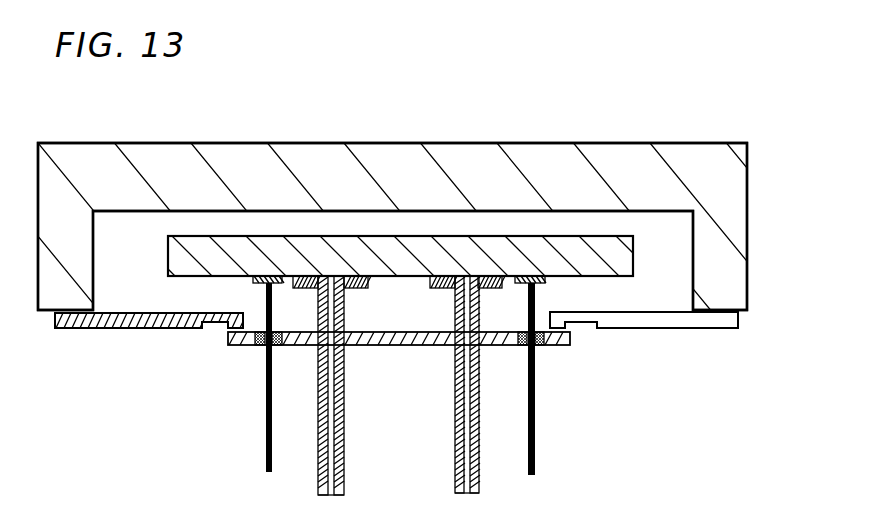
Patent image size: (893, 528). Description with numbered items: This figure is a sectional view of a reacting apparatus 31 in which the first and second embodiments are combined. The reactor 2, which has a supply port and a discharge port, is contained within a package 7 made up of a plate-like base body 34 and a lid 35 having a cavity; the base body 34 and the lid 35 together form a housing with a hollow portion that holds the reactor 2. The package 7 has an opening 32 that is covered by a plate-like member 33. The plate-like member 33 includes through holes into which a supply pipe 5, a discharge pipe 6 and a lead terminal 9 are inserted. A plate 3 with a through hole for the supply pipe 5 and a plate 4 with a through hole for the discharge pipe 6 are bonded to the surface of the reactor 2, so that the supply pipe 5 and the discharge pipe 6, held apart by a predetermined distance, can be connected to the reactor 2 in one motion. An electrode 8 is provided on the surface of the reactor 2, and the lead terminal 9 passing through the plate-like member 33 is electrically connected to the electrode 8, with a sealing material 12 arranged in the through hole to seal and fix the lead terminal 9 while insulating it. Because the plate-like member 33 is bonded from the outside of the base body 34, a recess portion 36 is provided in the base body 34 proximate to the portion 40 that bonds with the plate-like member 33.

The reacting apparatus 31 is at (797, 100).
The lid 35 is at (381, 140).
The reactor 2 is at (332, 236).
The electrode 8 is at (255, 276).
The plate 3 is at (297, 290).
The plate 4 is at (497, 290).
The lead terminal 9 is at (263, 420).
The supply pipe 5 is at (320, 458).
The discharge pipe 6 is at (478, 453).
The plate-like member 33 is at (422, 347).
The bonding portion 40 is at (232, 347).
The sealing material 12 is at (250, 345).
The opening 32 is at (387, 312).
The package 7 is at (83, 341).
The base body 34 is at (703, 330).
The recess portion 36 is at (207, 324).